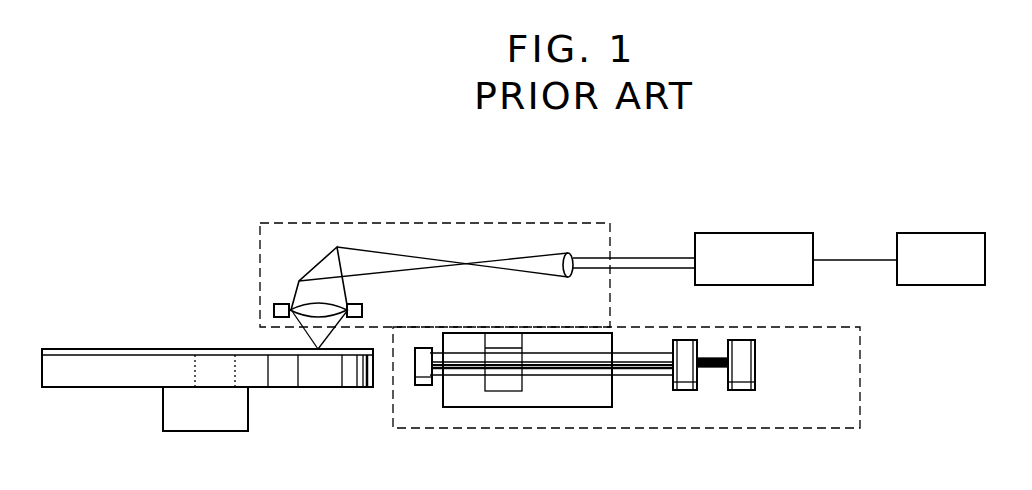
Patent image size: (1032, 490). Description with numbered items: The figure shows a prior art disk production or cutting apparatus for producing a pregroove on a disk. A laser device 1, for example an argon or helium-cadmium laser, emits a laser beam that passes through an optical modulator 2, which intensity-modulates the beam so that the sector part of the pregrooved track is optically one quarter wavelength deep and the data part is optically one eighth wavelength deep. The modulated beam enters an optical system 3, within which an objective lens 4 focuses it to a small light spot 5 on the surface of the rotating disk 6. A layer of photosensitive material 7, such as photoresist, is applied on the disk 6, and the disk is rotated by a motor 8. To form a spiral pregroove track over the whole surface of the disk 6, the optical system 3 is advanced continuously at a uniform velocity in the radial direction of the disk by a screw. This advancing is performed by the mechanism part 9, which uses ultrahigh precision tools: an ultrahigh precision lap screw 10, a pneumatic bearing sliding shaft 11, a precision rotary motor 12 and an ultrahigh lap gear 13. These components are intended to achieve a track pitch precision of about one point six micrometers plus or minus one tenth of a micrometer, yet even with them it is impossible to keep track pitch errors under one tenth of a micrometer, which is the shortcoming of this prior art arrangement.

The laser device 1 is at (967, 233).
The optical modulator 2 is at (797, 233).
The optical system 3 is at (549, 222).
The objective lens 4 is at (362, 310).
The light spot 5 is at (320, 356).
The disk 6 is at (107, 388).
The layer of photosensitive material 7 is at (90, 349).
The motor 8 is at (248, 415).
The mechanism part 9 is at (830, 327).
The ultrahigh precision lap screw 10 is at (651, 376).
The pneumatic bearing sliding shaft 11 is at (562, 408).
The precision rotary motor 12 is at (741, 392).
The ultrahigh lap gear 13 is at (683, 392).